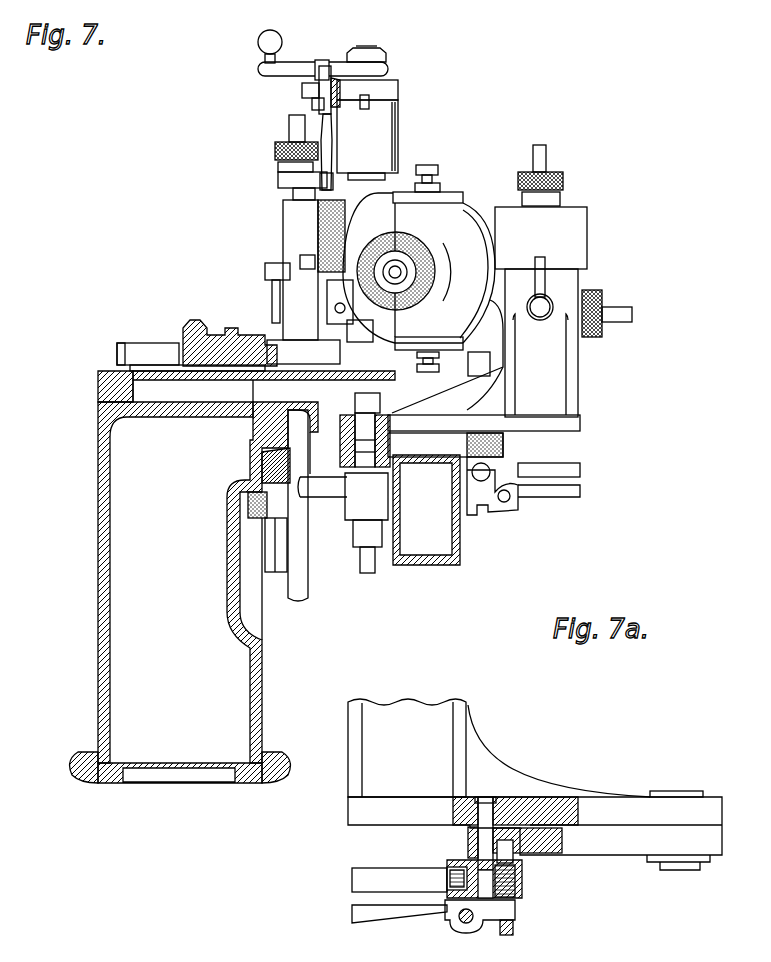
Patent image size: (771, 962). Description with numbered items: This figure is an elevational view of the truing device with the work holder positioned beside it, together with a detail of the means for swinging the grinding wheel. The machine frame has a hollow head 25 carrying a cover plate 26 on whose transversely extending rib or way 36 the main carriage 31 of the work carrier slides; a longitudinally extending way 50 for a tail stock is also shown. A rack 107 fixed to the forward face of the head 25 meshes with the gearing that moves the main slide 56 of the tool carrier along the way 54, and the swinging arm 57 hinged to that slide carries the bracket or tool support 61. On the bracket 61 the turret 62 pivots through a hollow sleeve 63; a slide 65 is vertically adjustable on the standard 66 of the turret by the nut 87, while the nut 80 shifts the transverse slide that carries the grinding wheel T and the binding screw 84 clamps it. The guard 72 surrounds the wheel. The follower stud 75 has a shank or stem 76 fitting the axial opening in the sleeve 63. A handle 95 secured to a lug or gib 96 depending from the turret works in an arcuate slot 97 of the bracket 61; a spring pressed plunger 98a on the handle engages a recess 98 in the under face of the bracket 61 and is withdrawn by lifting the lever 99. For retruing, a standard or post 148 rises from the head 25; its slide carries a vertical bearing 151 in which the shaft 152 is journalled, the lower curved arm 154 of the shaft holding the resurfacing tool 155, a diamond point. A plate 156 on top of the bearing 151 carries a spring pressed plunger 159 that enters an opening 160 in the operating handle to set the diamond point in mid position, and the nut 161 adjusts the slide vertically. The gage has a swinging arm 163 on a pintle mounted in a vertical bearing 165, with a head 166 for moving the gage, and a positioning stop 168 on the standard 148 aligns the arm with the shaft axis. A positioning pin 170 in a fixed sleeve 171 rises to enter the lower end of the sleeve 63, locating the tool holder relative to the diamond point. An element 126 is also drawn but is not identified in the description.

In FIG. 7, the opening 160 is at (318, 62).
In FIG. 7, the swinging arm 163 is at (290, 62).
In FIG. 7, the shaft 152 is at (370, 52).
In FIG. 7, the plate 156 is at (392, 94).
In FIG. 7, the vertical bearing 151 is at (388, 126).
In FIG. 7, the spring pressed plunger 159 is at (313, 103).
In FIG. 7, the nut 161 is at (278, 150).
In FIG. 7, the standard or post 148 is at (300, 232).
In FIG. 7, the curved arm 154 is at (325, 240).
In FIG. 7, the resurfacing tool 155 is at (300, 262).
In FIG. 7, the positioning stop 168 is at (337, 290).
In FIG. 7, the vertical bearing 165 is at (360, 325).
In FIG. 7, the head 166 is at (416, 360).
In FIG. 7, the guard 72 is at (455, 218).
In FIG. 7, the tool T is at (423, 252).
In FIG. 7, the screw 126 is at (436, 168).
In FIG. 7, the nut 87 is at (560, 172).
In FIG. 7, the slide 65 is at (568, 222).
In FIG. 7, the standard 66 is at (562, 388).
In FIG. 7, the nut 80 is at (594, 295).
In FIG. 7, the binding screw 84 is at (489, 360).
In FIG. 7, the turret 62 is at (452, 428).
In FIG. 7, the bracket or tool support 61 is at (506, 447).
In FIG. 7A, the bracket or tool support 61 is at (625, 848).
In FIG. 7, the handle 95 is at (582, 472).
In FIG. 7A, the handle 95 is at (355, 880).
In FIG. 7, the swinging arm 57 is at (462, 545).
In FIG. 7, the main carriage 31 is at (146, 342).
In FIG. 7, the way 50 is at (195, 322).
In FIG. 7, the rib or way 36 is at (128, 367).
In FIG. 7, the cover plate 26 is at (96, 388).
In FIG. 7, the hollow head 25 is at (262, 672).
In FIG. 7, the slide 56 is at (300, 583).
In FIG. 7, the way 54 is at (262, 442).
In FIG. 7, the rack 107 is at (247, 502).
In FIG. 7, the follower stud 75 is at (380, 402).
In FIG. 7, the shank or stem 76 is at (353, 427).
In FIG. 7, the hollow sleeve 63 is at (353, 440).
In FIG. 7A, the hollow sleeve 63 is at (690, 791).
In FIG. 7, the positioning pin 170 is at (388, 458).
In FIG. 7, the fixed sleeve 171 is at (358, 538).
In FIG. 7A, the recess 98 is at (540, 792).
In FIG. 7A, the spring pressed plunger 98a is at (510, 855).
In FIG. 7A, the arcuate slot 97 is at (470, 832).
In FIG. 7A, the lever 99 is at (374, 912).
In FIG. 7A, the lug or gib 96 is at (460, 906).